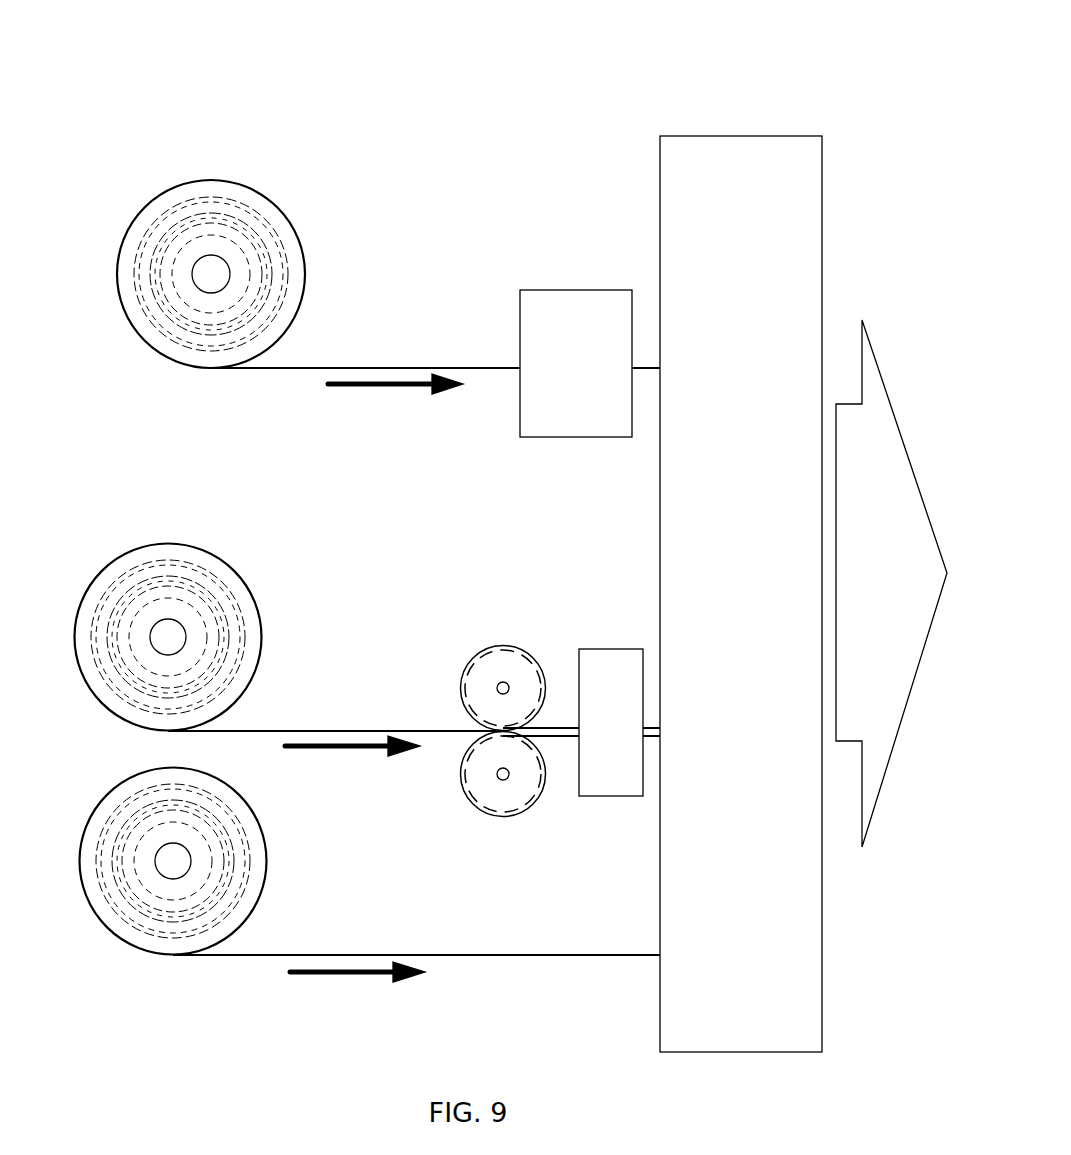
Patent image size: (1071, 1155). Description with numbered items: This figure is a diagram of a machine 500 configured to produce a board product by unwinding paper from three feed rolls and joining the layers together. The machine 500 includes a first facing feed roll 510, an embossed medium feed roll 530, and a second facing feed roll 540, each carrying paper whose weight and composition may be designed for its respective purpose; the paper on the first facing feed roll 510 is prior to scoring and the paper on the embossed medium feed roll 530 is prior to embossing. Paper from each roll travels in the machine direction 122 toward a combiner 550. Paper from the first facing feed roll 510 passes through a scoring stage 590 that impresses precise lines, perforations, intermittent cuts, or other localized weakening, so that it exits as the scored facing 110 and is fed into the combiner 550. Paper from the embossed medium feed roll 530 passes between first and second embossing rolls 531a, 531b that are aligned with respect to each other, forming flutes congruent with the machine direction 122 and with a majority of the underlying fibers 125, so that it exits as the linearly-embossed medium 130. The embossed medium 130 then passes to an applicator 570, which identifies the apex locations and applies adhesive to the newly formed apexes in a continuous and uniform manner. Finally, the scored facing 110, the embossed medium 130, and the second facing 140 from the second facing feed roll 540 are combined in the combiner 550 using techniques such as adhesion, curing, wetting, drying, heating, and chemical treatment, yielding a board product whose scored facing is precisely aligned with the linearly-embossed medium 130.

The machine 500 is at (548, 112).
The first facing feed roll 510 is at (127, 325).
The scored facing 110 is at (492, 370).
The machine direction 122 is at (357, 388).
The scoring stage 590 is at (576, 363).
The combiner 550 is at (803, 594).
The embossed medium feed roll 530 is at (83, 688).
The second facing feed roll 540 is at (92, 933).
The first embossing roll 531a is at (470, 650).
The second embossing roll 531b is at (455, 783).
The underlying fibers 125 is at (342, 791).
The embossed medium 130 is at (550, 740).
The applicator 570 is at (611, 722).
The second facing 140 is at (602, 955).